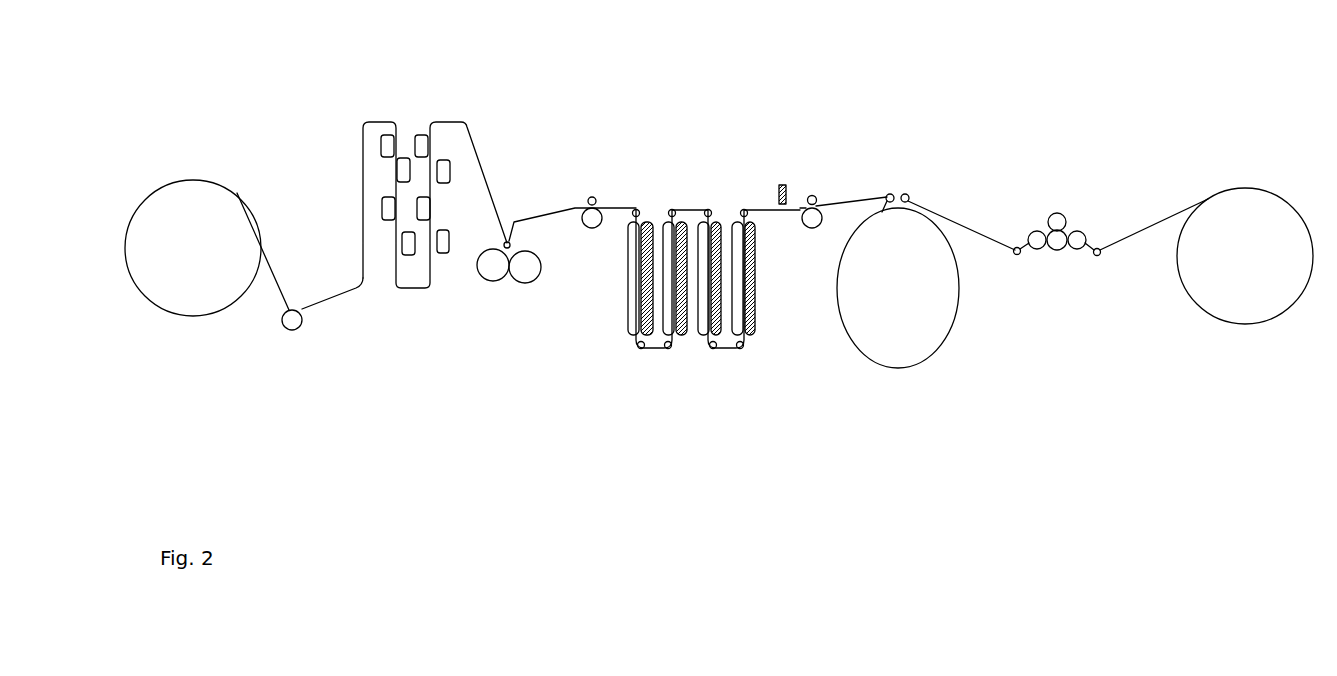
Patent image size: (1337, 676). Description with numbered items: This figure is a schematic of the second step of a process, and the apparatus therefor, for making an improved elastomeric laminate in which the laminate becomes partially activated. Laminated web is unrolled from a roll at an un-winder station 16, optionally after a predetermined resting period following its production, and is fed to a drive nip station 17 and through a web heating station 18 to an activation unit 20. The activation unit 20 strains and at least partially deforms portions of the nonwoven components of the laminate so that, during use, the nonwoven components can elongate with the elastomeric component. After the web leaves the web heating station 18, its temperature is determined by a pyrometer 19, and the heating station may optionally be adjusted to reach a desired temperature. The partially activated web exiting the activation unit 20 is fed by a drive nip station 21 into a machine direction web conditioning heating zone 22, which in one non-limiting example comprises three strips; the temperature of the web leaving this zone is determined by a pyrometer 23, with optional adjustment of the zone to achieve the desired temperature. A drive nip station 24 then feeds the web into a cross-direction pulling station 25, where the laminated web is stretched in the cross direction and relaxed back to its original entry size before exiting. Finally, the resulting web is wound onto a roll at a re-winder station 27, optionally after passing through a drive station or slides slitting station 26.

The un-winder station 16 is at (238, 195).
The drive nip station 17 is at (284, 329).
The web heating station 18 is at (388, 217).
The pyrometer 19 is at (479, 158).
The activation unit 20 is at (483, 279).
The drive nip station 21 is at (594, 196).
The machine direction web conditioning heating zone 22 is at (717, 337).
The pyrometer 23 is at (777, 183).
The drive nip station 24 is at (815, 198).
The cross-direction pulling station 25 is at (882, 373).
The drive station or slides slitting station 26 is at (1053, 213).
The re-winder station 27 is at (1258, 189).